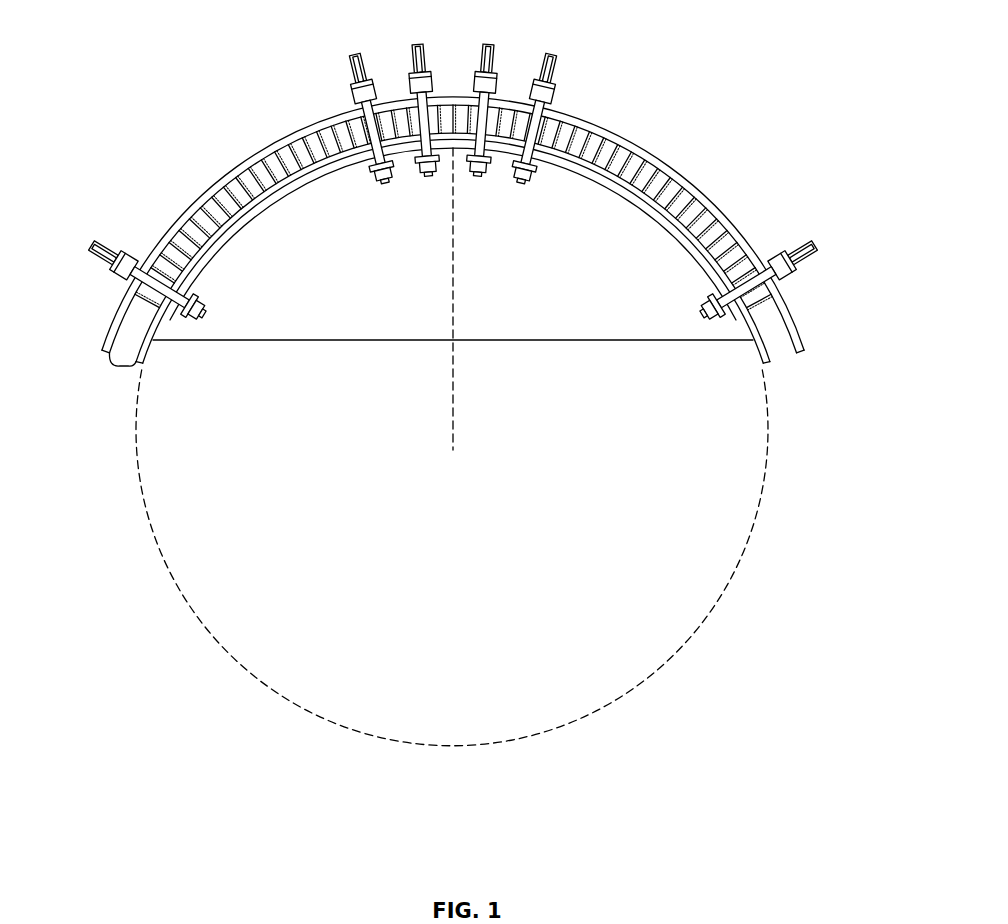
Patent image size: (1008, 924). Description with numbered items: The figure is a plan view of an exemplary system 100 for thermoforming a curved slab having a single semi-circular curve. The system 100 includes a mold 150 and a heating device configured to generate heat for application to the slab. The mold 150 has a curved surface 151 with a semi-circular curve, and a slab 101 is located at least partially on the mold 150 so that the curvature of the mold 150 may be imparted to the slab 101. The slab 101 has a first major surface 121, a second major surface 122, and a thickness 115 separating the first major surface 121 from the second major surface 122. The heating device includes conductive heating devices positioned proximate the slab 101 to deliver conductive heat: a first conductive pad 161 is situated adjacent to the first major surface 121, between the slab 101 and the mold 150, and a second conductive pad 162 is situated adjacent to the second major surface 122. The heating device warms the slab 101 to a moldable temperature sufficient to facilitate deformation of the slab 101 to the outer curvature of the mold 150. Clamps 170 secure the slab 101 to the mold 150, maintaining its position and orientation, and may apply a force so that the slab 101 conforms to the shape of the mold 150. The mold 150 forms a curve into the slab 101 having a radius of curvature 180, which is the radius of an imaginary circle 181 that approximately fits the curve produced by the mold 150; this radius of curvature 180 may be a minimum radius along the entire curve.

The system 100 is at (158, 56).
The slab 101 is at (282, 165).
The thickness 115 is at (120, 366).
The first major surface 121 is at (238, 217).
The second major surface 122 is at (222, 178).
The mold 150 is at (538, 320).
The curved surface 151 is at (660, 213).
The first conductive pad 161 is at (720, 217).
The second conductive pad 162 is at (643, 147).
The clamps 170 is at (562, 86).
The radius of curvature 180 is at (452, 400).
The imaginary circle 181 is at (688, 648).